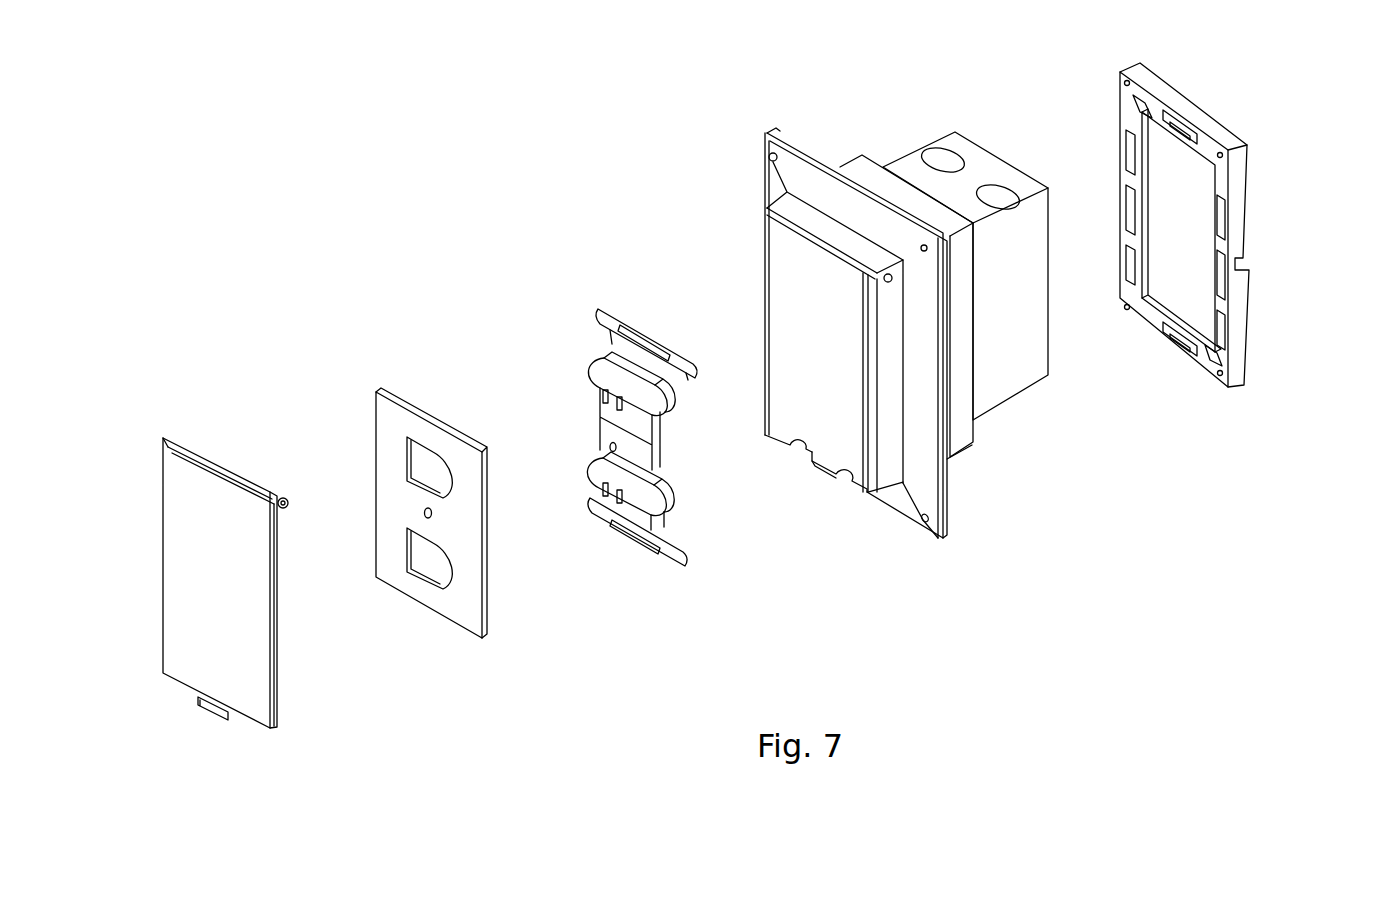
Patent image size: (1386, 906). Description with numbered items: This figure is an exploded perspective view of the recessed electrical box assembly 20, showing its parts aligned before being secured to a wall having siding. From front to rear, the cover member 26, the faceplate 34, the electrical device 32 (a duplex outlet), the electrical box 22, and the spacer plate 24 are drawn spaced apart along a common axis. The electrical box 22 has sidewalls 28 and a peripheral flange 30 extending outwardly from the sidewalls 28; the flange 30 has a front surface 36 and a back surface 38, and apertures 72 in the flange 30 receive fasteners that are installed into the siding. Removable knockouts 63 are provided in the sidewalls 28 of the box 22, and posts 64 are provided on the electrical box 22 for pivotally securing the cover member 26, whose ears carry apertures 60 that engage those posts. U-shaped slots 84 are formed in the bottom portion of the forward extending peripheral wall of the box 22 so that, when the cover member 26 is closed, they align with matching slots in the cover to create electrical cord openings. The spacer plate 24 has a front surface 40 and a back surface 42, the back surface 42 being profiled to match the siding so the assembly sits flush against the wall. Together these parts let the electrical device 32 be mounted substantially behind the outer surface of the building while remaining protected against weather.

The recessed electrical box assembly 20 is at (1120, 70).
The electrical box 22 is at (871, 356).
The spacer plate 24 is at (1220, 264).
The cover member 26 is at (260, 622).
The sidewalls 28 is at (965, 264).
The peripheral flange 30 is at (906, 307).
The electrical device 32 is at (688, 553).
The faceplate 34 is at (482, 640).
The front surface 36 is at (903, 461).
The back surface 38 is at (963, 477).
The front surface 40 is at (1208, 252).
The back surface 42 is at (1272, 287).
The apertures 60 is at (289, 500).
The knockouts 63 is at (940, 160).
The posts 64 is at (884, 281).
The apertures 72 is at (774, 148).
The U-shaped slots 84 is at (792, 443).